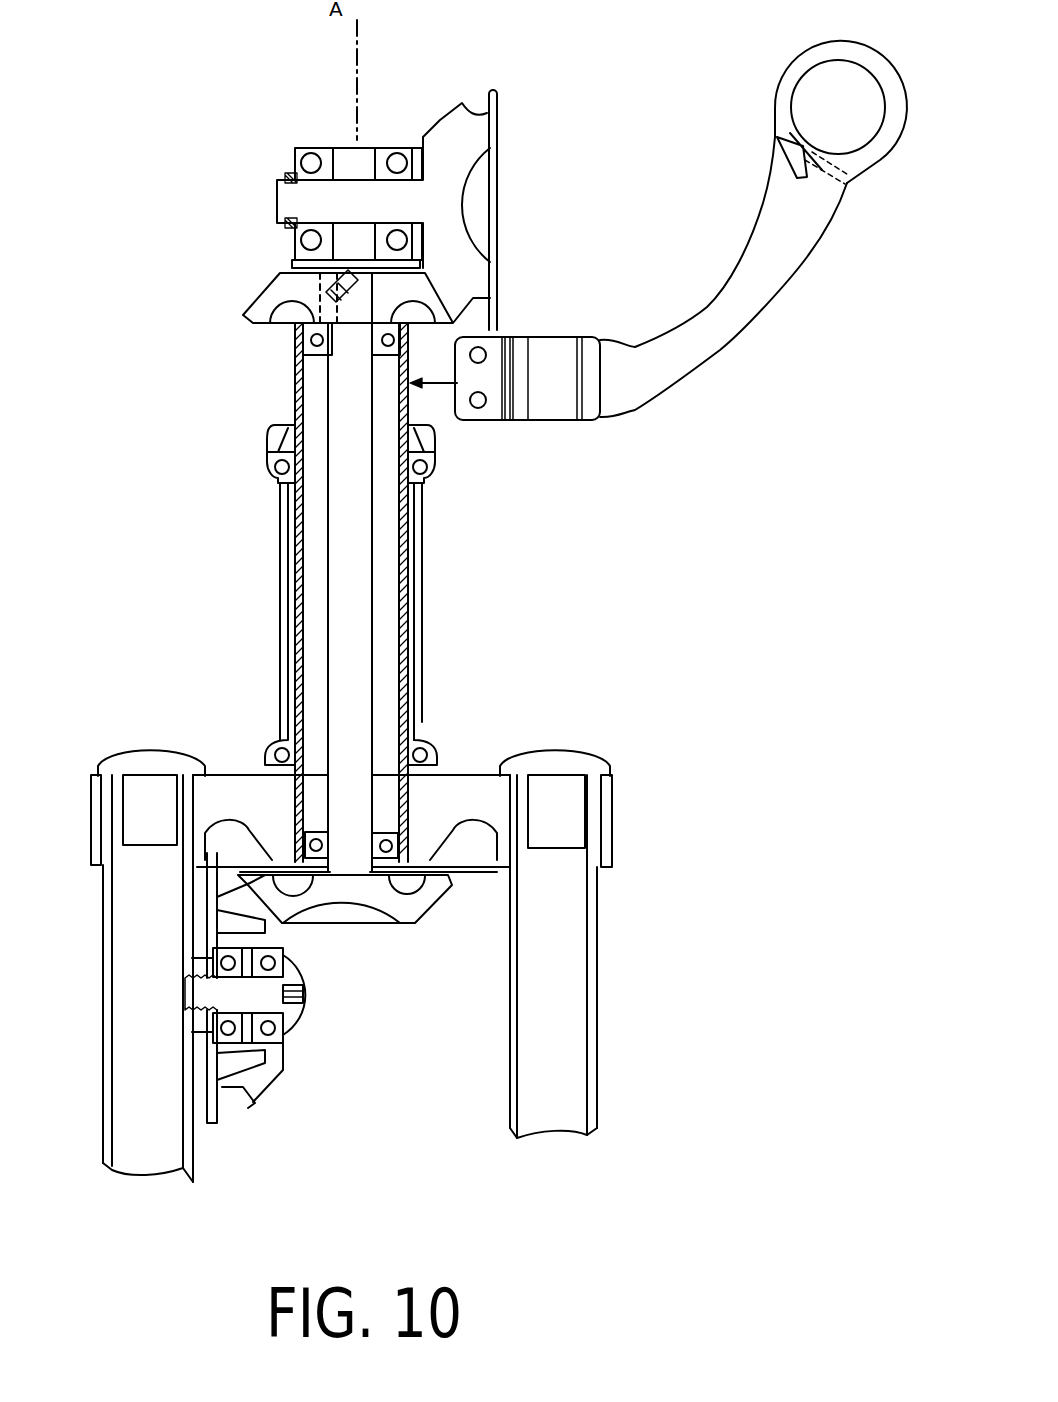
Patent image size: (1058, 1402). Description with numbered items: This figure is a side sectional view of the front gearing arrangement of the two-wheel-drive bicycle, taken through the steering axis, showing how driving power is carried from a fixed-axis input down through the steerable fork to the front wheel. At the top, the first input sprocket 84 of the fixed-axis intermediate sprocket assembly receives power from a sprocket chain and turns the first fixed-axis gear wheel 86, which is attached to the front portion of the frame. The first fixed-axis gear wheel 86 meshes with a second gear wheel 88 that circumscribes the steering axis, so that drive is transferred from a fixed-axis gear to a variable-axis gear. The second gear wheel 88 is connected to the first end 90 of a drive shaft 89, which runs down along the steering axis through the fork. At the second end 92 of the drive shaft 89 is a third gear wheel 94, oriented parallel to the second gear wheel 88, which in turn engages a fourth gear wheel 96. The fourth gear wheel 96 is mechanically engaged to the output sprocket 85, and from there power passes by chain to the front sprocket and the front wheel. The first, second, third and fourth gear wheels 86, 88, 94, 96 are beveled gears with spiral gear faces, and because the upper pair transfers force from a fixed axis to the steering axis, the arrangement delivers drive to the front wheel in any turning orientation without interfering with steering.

The first input sprocket 84 is at (497, 98).
The output sprocket 85 is at (225, 1108).
The first fixed-axis gear wheel 86 is at (437, 123).
The second gear wheel 88 is at (273, 281).
The drive shaft 89 is at (350, 668).
The first end 90 is at (352, 308).
The second end 92 is at (347, 860).
The third gear wheel 94 is at (437, 912).
The fourth gear wheel 96 is at (270, 1085).